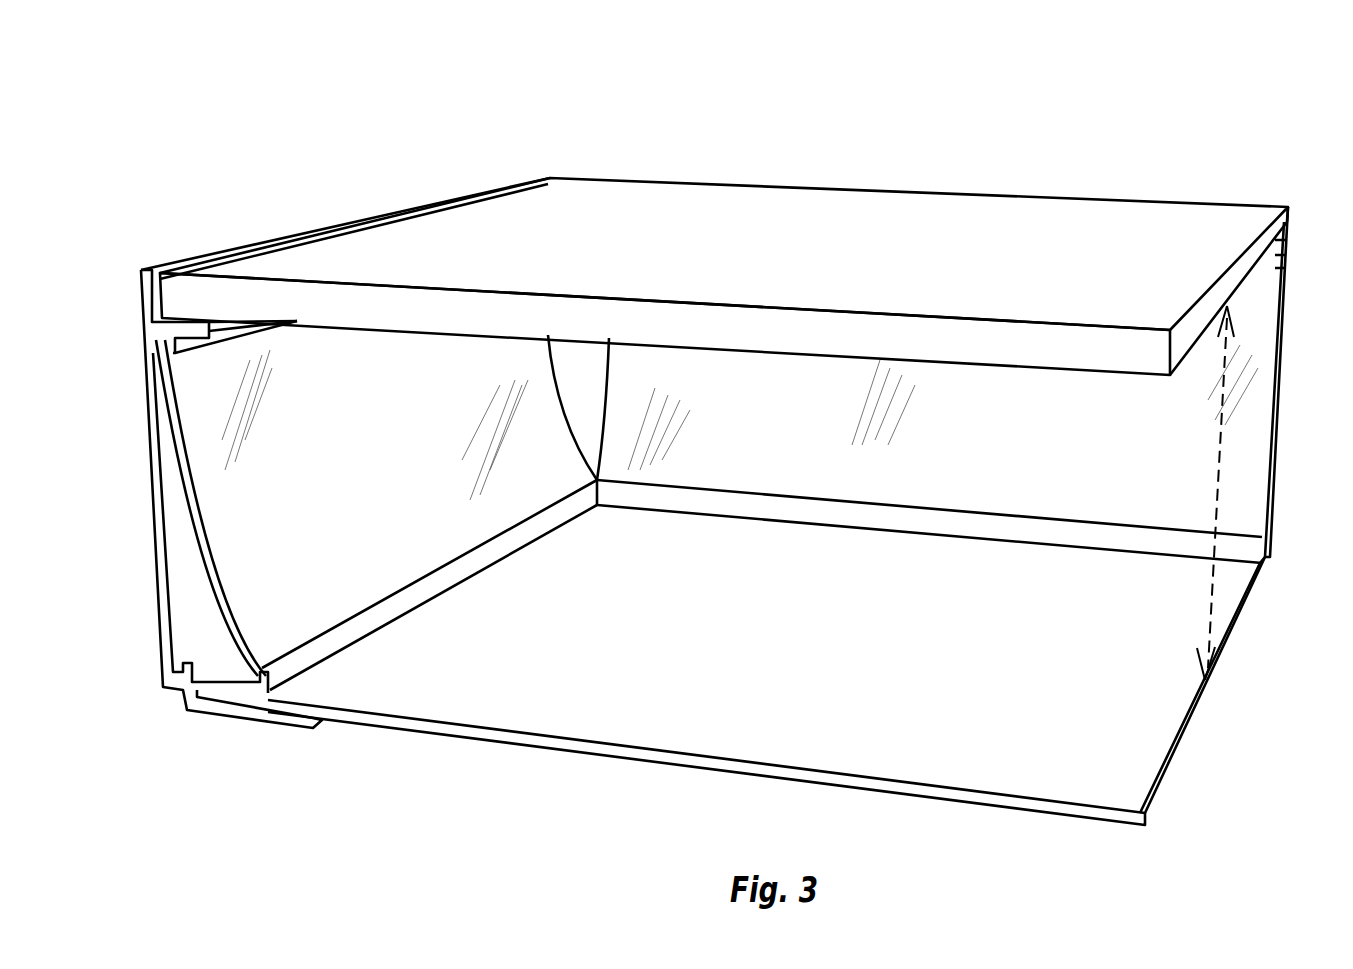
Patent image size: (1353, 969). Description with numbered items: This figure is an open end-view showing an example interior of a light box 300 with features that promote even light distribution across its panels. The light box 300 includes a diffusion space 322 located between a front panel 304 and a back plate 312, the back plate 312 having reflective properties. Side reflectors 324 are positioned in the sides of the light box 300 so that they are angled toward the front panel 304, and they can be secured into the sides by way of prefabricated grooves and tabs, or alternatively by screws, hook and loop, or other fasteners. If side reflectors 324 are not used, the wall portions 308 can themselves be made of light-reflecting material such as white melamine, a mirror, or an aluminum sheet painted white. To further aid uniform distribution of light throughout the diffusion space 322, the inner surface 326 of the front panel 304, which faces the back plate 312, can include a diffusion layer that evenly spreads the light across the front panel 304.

The light box 300 is at (448, 86).
The front panel 304 is at (890, 213).
The wall portions 308 is at (151, 490).
The back plate 312 is at (605, 712).
The diffusion space 322 is at (1217, 495).
The side reflectors 324 is at (247, 583).
The inner surface of the front panel 326 is at (1108, 375).